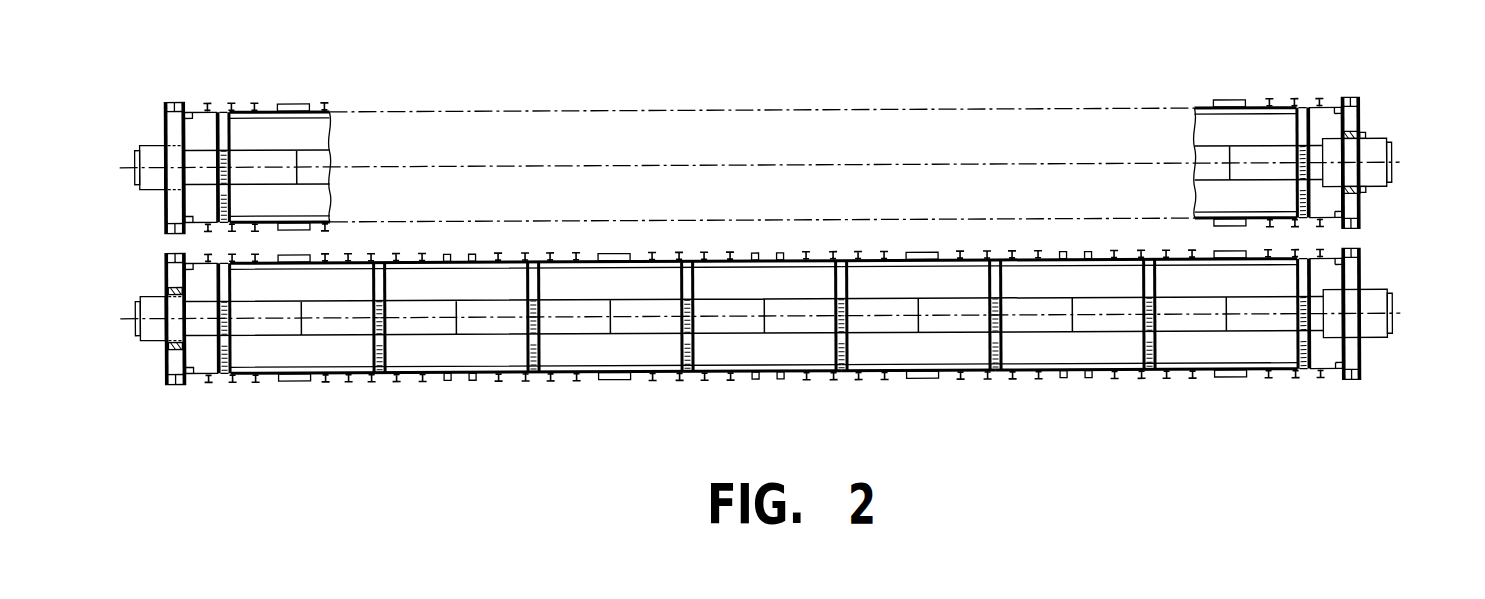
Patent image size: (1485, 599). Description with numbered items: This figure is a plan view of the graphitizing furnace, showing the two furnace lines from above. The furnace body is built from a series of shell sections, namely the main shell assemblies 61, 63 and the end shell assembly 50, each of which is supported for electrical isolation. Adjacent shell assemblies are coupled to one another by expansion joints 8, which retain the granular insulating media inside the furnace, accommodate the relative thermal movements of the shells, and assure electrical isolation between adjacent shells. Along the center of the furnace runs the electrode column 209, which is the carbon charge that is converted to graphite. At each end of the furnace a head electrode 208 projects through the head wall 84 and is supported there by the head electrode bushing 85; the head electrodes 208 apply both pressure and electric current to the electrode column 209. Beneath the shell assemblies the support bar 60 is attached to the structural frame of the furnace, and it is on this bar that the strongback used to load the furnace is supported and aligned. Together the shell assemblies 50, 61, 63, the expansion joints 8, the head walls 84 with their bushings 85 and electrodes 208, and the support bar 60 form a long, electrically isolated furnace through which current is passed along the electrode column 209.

The head electrode 208 is at (145, 193).
The head wall 84 is at (165, 358).
The head electrode bushing 85 is at (1364, 138).
The support bar 60 is at (603, 383).
The electrode column 209 is at (795, 326).
The expansion joint 8 is at (847, 348).
The main shell assembly 63 is at (1102, 370).
The main shell assembly 61 is at (1178, 373).
The end shell assembly 50 is at (1326, 373).